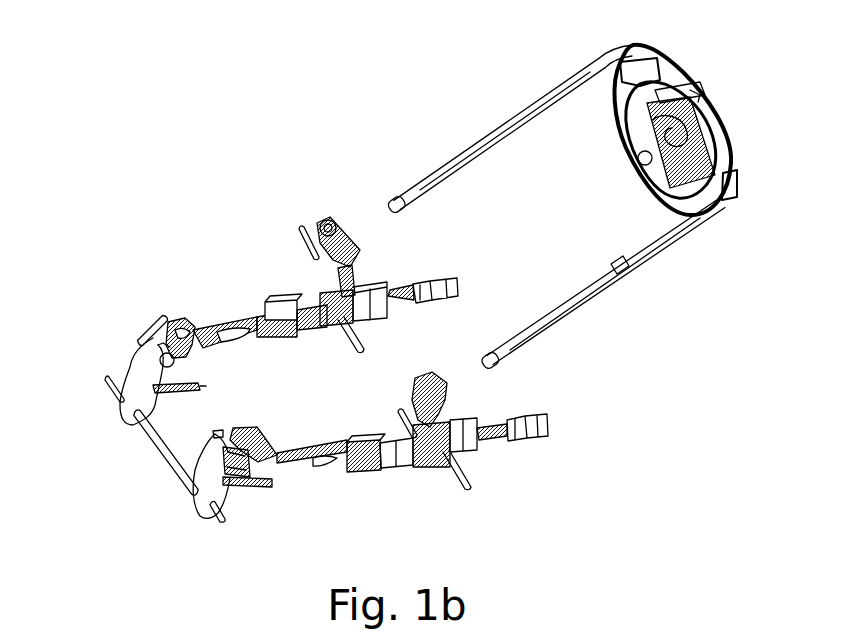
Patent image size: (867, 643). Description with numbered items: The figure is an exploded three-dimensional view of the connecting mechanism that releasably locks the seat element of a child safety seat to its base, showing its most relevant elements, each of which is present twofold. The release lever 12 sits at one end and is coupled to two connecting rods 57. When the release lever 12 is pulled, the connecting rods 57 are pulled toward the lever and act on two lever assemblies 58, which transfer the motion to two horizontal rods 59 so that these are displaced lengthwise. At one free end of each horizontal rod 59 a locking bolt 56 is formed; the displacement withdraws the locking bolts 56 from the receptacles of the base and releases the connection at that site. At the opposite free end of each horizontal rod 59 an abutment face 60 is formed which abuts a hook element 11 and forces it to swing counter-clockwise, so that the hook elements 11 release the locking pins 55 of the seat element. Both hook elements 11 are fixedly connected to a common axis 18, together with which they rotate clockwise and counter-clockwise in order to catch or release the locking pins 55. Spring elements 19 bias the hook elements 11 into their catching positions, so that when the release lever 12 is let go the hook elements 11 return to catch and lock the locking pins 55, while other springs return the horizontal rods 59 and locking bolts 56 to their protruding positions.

The hook element 11 is at (133, 366).
The release lever 12 is at (731, 205).
The common axis 18 is at (158, 437).
The spring element 19 is at (190, 388).
The locking pin 55 is at (145, 322).
The locking bolt 56 is at (432, 284).
The connecting rod 57 is at (511, 118).
The lever assembly 58 is at (340, 248).
The horizontal rod 59 is at (300, 302).
The abutment face 60 is at (183, 330).